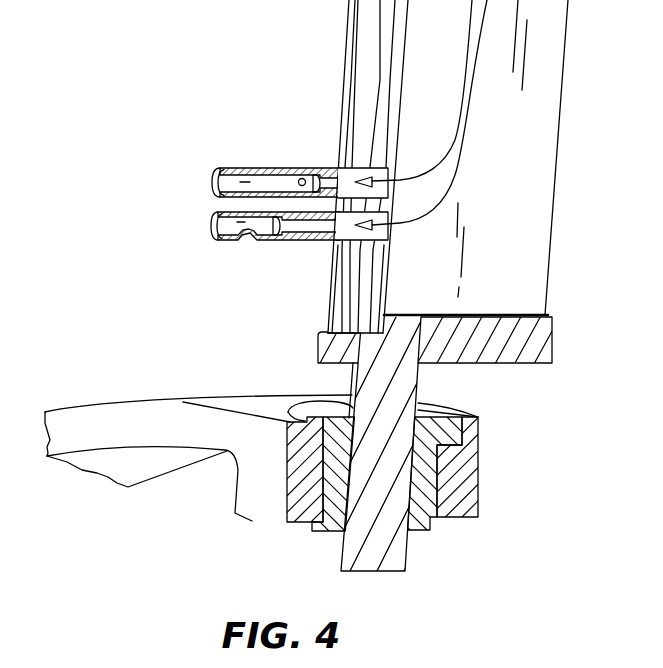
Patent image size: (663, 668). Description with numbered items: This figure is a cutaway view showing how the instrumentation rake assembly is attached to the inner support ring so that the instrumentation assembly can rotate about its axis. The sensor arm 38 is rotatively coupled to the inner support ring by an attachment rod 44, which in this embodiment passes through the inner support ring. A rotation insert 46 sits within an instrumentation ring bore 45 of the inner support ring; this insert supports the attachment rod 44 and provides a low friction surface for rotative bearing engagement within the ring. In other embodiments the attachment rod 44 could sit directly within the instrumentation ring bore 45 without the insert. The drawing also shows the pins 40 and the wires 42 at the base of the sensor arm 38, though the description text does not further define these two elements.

The sensor arm 38 is at (527, 240).
The terminal pins 40 is at (213, 144).
The wires 42 is at (494, 90).
The attachment rod 44 is at (440, 390).
The instrumentation ring bore 45 is at (463, 491).
The rotation insert 46 is at (324, 459).